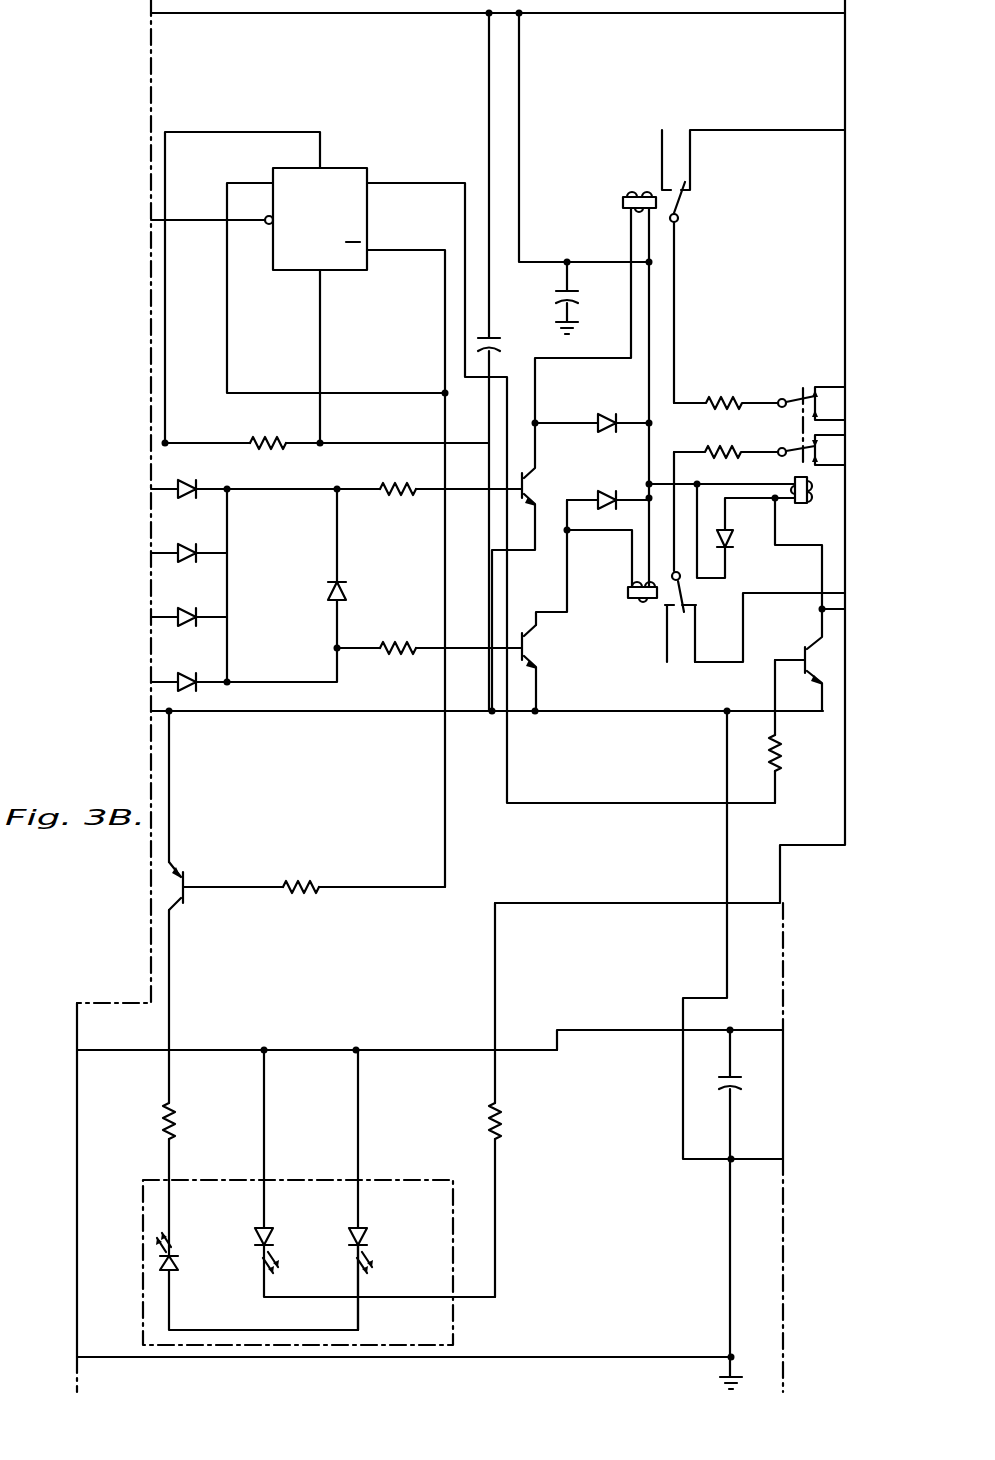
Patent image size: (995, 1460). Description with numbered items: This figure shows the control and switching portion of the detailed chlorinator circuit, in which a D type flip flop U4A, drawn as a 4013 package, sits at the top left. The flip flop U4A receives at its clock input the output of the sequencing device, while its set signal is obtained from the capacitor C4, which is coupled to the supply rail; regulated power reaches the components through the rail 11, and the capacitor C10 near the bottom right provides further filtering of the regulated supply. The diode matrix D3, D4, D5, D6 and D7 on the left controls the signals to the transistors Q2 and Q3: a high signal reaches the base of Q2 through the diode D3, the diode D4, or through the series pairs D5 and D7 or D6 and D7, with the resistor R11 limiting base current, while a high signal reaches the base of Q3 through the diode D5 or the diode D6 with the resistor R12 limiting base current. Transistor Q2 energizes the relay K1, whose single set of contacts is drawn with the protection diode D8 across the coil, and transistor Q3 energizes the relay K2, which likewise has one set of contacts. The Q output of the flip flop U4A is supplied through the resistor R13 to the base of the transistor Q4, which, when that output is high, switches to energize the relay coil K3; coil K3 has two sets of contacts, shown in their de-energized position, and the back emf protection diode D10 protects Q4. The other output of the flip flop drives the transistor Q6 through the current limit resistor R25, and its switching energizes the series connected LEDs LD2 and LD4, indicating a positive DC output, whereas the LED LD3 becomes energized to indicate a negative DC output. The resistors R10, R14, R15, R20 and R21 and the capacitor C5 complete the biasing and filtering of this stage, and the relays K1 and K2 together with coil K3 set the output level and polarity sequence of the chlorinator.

The D type flip flop U4A is at (332, 216).
The CMOS dual D flip-flop IC type 4013 is at (342, 268).
The relay K1 is at (625, 196).
The relay K2 is at (625, 594).
The relay coil K3 is at (800, 505).
The capacitor C4 is at (505, 350).
The capacitor C5 is at (576, 296).
The capacitor C10 is at (720, 1074).
The diode D3 is at (196, 480).
The diode D4 is at (208, 536).
The diode D5 is at (200, 610).
The diode D6 is at (198, 675).
The diode D7 is at (345, 575).
The protection diode D8 is at (604, 412).
The back emf protection diode D10 is at (730, 550).
The resistor R10 is at (254, 440).
The current limit resistor R11 is at (384, 486).
The current limit resistor R12 is at (388, 643).
The current limit resistor R13 is at (782, 762).
The resistor R14 is at (705, 448).
The resistor R15 is at (710, 400).
The resistor R20 is at (503, 1133).
The resistor R21 is at (180, 1130).
The current limit resistor R25 is at (302, 882).
The transistor Q2 is at (533, 479).
The transistor Q3 is at (538, 643).
The transistor Q4 is at (805, 651).
The transistor Q6 is at (187, 876).
The LED LD2 is at (193, 1244).
The LED LD3 is at (295, 1246).
The LED LD4 is at (387, 1274).
The rail 11 is at (299, 1048).